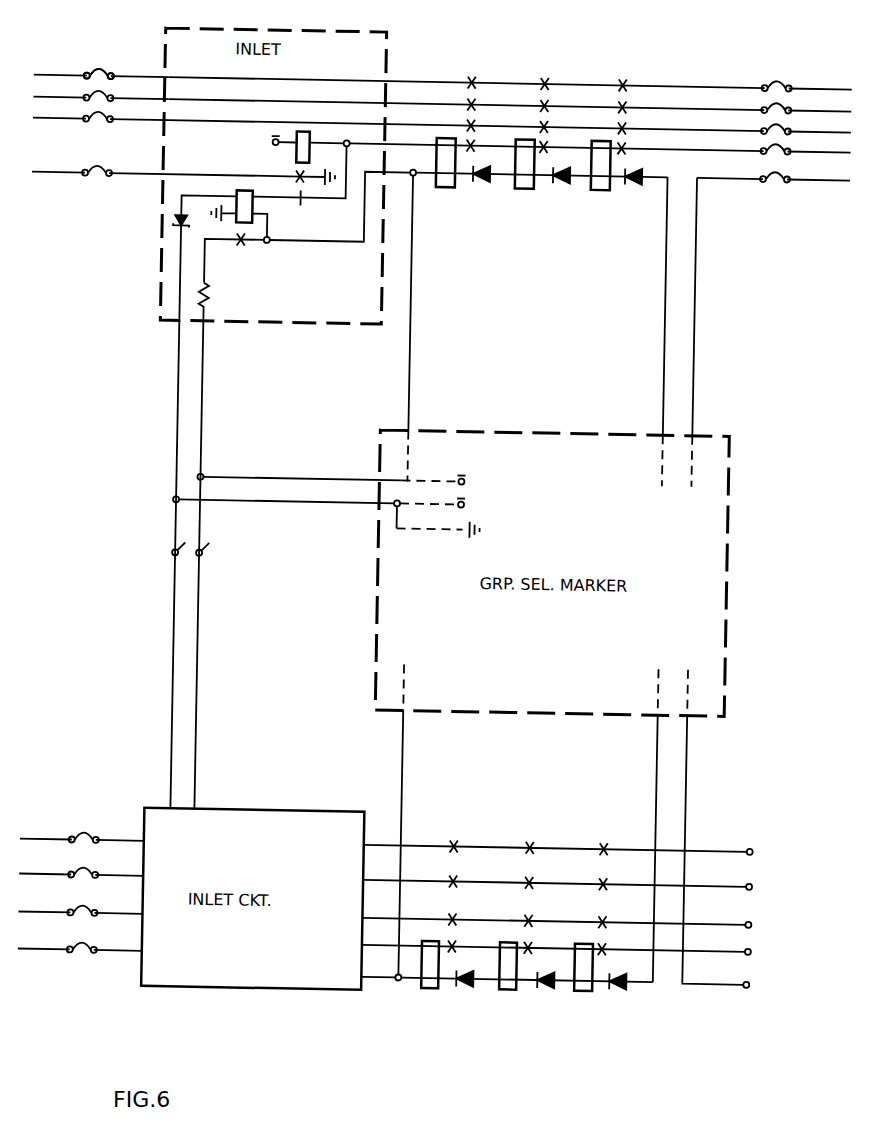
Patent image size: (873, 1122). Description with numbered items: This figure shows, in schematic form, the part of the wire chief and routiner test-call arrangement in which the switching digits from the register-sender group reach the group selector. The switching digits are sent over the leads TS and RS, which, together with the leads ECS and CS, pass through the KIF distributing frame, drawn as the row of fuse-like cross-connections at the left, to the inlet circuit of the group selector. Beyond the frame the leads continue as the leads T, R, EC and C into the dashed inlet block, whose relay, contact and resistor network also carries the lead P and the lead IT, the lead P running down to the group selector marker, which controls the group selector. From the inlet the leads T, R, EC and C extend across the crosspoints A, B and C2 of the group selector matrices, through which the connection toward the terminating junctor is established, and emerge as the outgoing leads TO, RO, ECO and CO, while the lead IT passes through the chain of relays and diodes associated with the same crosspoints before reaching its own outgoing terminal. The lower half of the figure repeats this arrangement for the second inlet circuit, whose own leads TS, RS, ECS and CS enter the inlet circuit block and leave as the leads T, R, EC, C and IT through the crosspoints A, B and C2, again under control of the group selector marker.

The lead TS is at (94, 451).
The lead RS is at (94, 479).
The EC selector lead ECS is at (93, 509).
The C selector lead CS is at (177, 556).
The T lead T is at (477, 456).
The R lead R is at (477, 484).
The EC lead EC is at (472, 514).
The C lead C is at (476, 541).
The IT lead IT is at (605, 571).
The T output lead TO is at (830, 78).
The R output lead RO is at (830, 100).
The EC output lead ECO is at (832, 121).
The C output lead CO is at (827, 141).
The KIF distributing frame KIF is at (101, 64).
The P lead P is at (336, 564).
The crosspoint A is at (456, 523).
The crosspoint B is at (535, 523).
The crosspoint C C2 is at (609, 525).